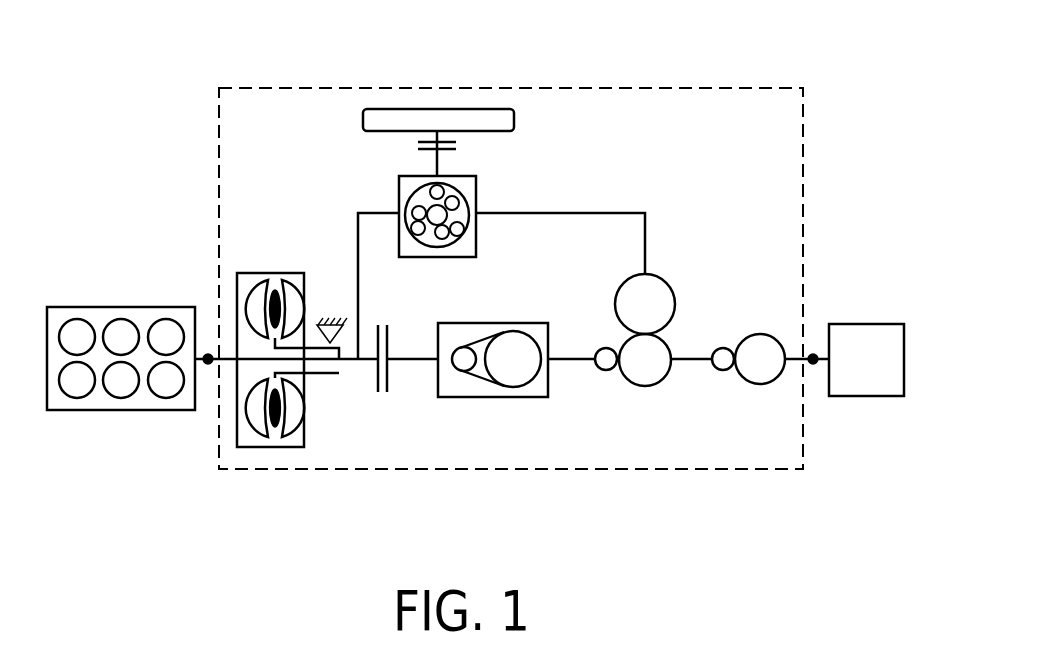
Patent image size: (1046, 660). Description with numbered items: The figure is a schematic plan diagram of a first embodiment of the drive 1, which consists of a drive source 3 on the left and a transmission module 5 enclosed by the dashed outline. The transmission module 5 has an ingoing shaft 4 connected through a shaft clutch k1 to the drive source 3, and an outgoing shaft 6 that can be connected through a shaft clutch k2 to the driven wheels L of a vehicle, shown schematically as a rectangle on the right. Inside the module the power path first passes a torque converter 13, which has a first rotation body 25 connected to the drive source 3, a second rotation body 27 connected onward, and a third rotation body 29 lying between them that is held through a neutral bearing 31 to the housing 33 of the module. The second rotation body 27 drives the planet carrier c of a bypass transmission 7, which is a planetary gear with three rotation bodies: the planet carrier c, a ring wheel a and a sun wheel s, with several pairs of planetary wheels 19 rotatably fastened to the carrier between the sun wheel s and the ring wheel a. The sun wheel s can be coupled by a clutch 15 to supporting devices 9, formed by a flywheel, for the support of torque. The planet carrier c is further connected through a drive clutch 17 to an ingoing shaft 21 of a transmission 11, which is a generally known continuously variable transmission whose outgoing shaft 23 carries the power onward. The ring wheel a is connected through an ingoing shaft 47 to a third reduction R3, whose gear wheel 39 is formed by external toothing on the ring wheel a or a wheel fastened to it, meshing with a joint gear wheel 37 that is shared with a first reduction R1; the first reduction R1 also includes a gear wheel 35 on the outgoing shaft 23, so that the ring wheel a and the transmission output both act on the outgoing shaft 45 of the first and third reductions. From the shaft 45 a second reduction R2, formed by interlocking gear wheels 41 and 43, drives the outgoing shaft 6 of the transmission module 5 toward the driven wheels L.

The drive 1 is at (138, 126).
The drive source 3 is at (112, 306).
The ingoing shaft 4 is at (218, 366).
The transmission module 5 is at (369, 87).
The outgoing shaft 6 is at (806, 366).
The bypass transmission 7 is at (470, 218).
The supporting devices 9 is at (458, 117).
The transmission 11 is at (500, 399).
The torque converter 13 is at (271, 278).
The clutch 15 is at (416, 146).
The drive clutch 17 is at (382, 397).
The planetary wheels 19 is at (456, 236).
The ingoing shaft of the transmission 21 is at (422, 362).
The outgoing shaft of the transmission 23 is at (573, 363).
The first rotation body 25 is at (292, 418).
The second rotation body 27 is at (252, 420).
The third rotation body 29 is at (275, 432).
The neutral bearing 31 is at (346, 323).
The housing 33 is at (333, 316).
The gear wheel 35 is at (603, 351).
The joint gear wheel 37 is at (645, 367).
The gear wheel 39 is at (658, 297).
The gear wheel 41 is at (724, 353).
The gear wheel 43 is at (757, 367).
The outgoing shaft of the first reduction 45 is at (690, 362).
The ingoing shaft of the third reduction 47 is at (648, 228).
The shaft clutch k1 is at (208, 354).
The shaft clutch k2 is at (813, 354).
The sun wheel s is at (441, 175).
The planet carrier c is at (398, 210).
The ring wheel a is at (477, 216).
The first reduction R1 is at (615, 388).
The second reduction R2 is at (727, 388).
The third reduction R3 is at (676, 326).
The driven wheels L is at (866, 360).